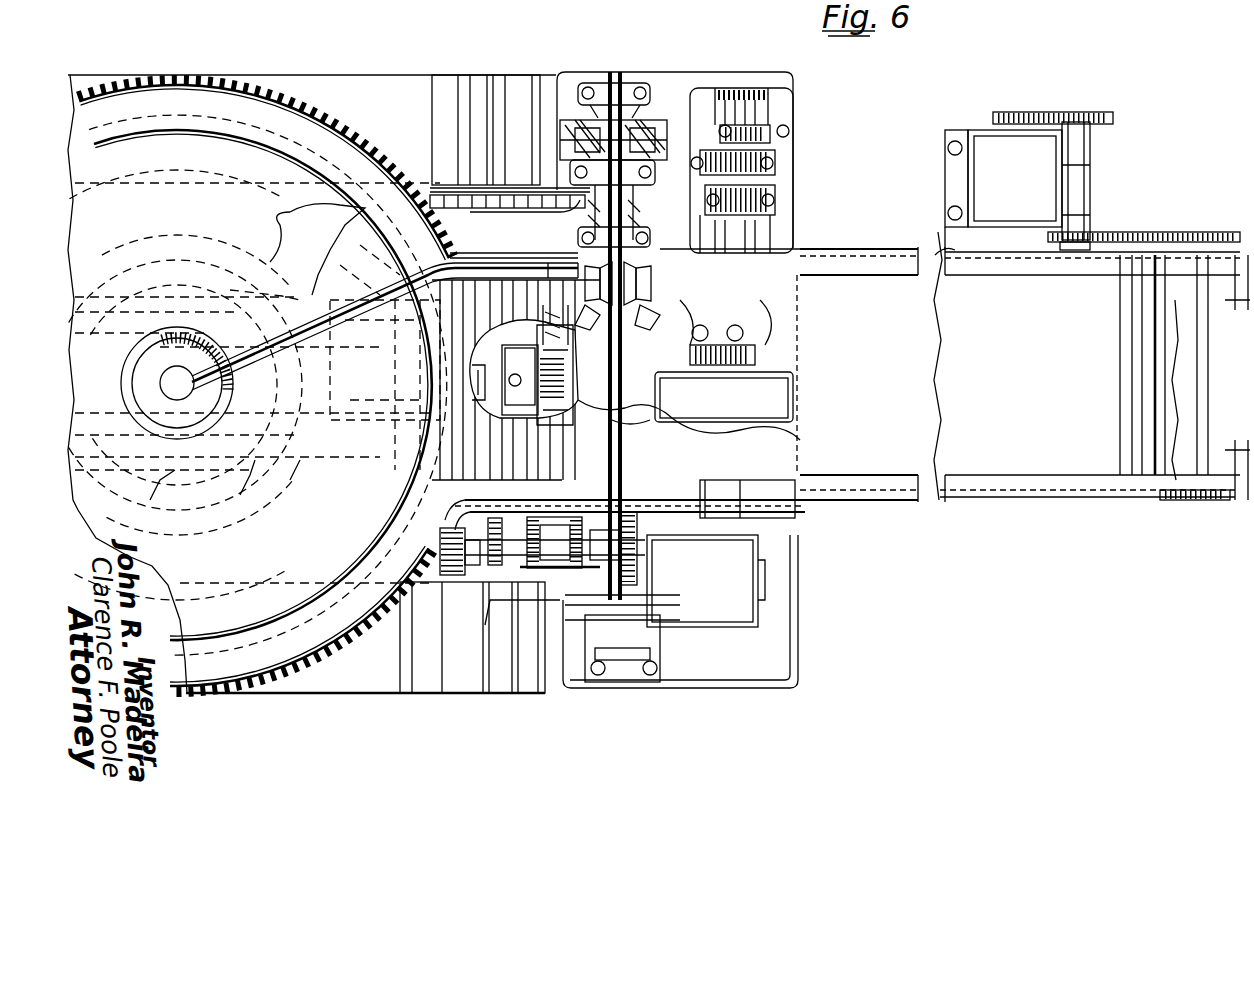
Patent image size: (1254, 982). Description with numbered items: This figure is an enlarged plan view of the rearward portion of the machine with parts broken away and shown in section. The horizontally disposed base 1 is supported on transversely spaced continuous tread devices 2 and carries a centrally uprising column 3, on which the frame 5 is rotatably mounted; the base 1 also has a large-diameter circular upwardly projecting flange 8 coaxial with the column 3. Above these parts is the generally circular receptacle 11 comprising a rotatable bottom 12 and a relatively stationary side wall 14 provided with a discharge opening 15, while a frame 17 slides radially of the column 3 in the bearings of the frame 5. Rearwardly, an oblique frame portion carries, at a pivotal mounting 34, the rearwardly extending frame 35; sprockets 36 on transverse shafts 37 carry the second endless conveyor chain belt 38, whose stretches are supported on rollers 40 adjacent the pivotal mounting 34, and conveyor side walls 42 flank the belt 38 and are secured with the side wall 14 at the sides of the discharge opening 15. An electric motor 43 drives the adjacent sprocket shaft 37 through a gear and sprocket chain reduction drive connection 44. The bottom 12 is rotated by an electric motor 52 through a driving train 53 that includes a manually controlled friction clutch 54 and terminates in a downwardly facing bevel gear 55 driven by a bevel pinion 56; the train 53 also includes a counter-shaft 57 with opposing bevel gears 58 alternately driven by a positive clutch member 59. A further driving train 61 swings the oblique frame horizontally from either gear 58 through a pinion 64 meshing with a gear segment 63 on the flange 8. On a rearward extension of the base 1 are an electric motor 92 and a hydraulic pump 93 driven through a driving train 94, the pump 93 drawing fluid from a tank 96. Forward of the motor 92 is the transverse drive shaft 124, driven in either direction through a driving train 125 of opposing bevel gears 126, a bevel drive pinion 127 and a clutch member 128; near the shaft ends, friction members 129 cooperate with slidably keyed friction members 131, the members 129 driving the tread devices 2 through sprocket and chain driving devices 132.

The base 1 is at (370, 257).
The continuous tread devices 2 is at (452, 80).
The column 3 is at (172, 498).
The frame 5 is at (178, 292).
The circular upwardly projecting flange 8 is at (348, 118).
The receptacle 11 is at (271, 244).
The bottom 12 is at (216, 140).
The side wall 14 is at (184, 118).
The discharge opening 15 is at (442, 395).
The frame 17 is at (265, 285).
The pivotal mounting 34 is at (745, 485).
The frame 35 is at (830, 490).
The sprockets 36 is at (1218, 232).
The transverse shafts 37 is at (1200, 353).
The second endless conveyor chain belt 38 is at (1135, 398).
The rollers 40 is at (328, 292).
The conveyor side walls 42 is at (1010, 485).
The electric motor 43 is at (978, 130).
The gear and sprocket chain reduction drive connection 44 is at (1098, 185).
The electric motor 52 is at (727, 620).
The driving train 53 is at (630, 505).
The friction clutch 54 is at (455, 575).
The bevel gear 55 is at (236, 500).
The bevel pinion 56 is at (296, 482).
The counter-shaft 57 is at (570, 570).
The opposing bevel gears 58 is at (570, 520).
The positive clutch member 59 is at (572, 515).
The driving train 61 is at (628, 427).
The gear segment 63 is at (508, 628).
The pinion 64 is at (668, 372).
The electric motor 92 is at (793, 398).
The hydraulic pump 93 is at (772, 190).
The driving train 94 is at (762, 338).
The tank 96 is at (800, 660).
The transverse drive shaft 124 is at (626, 350).
The driving train 125 is at (645, 238).
The opposing bevel gears 126 is at (565, 360).
The bevel drive pinion 127 is at (661, 320).
The clutch member 128 is at (563, 320).
The friction members 129 is at (645, 118).
The friction members 131 is at (650, 700).
The sprocket and chain driving devices 132 is at (562, 222).